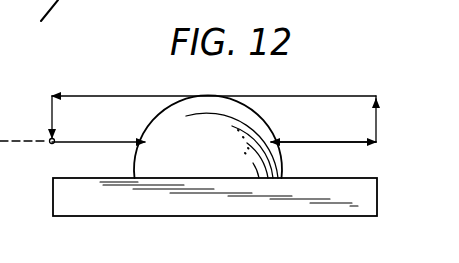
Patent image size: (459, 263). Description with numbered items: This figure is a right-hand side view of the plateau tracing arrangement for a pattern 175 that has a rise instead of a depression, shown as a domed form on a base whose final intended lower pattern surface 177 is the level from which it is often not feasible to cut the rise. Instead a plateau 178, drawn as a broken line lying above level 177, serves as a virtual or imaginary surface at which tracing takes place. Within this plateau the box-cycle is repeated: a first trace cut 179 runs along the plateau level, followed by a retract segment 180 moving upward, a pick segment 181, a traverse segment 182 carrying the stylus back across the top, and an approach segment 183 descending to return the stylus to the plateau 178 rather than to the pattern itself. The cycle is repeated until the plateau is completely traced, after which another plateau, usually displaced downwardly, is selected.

The pattern 175 is at (313, 207).
The final intended lower pattern surface 177 is at (352, 179).
The plateau 178 is at (27, 135).
The first trace cut 179 is at (338, 141).
The retract segment 180 is at (378, 127).
The pick segment 181 is at (378, 93).
The traverse segment 182 is at (157, 92).
The approach segment 183 is at (55, 117).